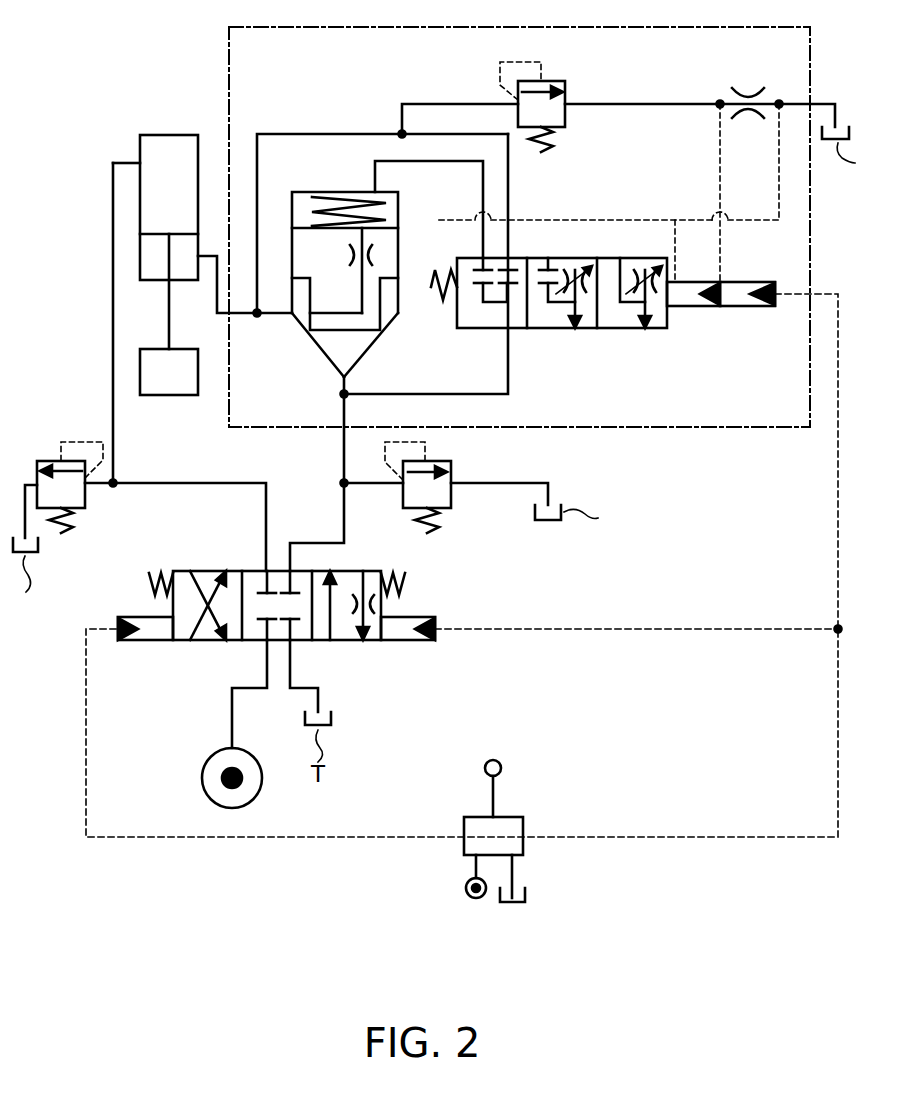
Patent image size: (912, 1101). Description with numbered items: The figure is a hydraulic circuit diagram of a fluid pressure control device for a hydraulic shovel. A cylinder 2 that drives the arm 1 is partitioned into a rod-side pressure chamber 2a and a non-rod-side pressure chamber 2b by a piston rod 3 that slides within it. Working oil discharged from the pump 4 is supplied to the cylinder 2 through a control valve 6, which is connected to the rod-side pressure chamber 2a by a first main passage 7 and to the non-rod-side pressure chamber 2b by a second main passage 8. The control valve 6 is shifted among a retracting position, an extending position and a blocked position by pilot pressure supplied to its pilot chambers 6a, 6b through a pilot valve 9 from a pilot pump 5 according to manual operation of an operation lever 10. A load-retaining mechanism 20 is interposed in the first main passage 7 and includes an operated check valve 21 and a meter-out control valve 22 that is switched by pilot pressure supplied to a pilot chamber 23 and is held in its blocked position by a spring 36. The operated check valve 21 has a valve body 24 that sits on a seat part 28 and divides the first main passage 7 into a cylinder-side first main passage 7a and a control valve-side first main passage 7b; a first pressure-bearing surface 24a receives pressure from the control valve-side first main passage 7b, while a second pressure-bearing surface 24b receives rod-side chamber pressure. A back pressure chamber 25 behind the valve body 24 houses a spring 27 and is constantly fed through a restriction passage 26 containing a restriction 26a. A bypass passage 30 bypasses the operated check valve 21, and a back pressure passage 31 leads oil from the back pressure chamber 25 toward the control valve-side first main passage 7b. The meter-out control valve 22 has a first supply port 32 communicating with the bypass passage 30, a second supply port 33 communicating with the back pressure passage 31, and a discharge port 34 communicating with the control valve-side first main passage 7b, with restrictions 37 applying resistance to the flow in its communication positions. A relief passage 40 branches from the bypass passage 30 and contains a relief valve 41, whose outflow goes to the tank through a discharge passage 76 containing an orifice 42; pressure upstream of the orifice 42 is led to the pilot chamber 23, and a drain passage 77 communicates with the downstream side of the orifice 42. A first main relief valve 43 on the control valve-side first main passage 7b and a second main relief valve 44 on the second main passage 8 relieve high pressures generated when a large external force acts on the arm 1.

The arm 1 is at (180, 396).
The cylinder 2 is at (137, 128).
The rod-side pressure chamber 2a is at (155, 270).
The non-rod-side pressure chamber 2b is at (153, 152).
The piston rod 3 is at (170, 305).
The pump 4 is at (202, 780).
The pilot pump 5 is at (476, 899).
The control valve 6 is at (208, 560).
The pilot chamber 6a is at (146, 626).
The pilot chamber 6b is at (409, 620).
The first main passage 7 is at (334, 411).
The cylinder-side first main passage 7a is at (240, 316).
The control valve-side first main passage 7b is at (343, 461).
The second main passage 8 is at (114, 450).
The pilot valve 9 is at (528, 806).
The operation lever 10 is at (494, 760).
The load-retaining mechanism 20 is at (737, 428).
The operated check valve 21 is at (344, 265).
The meter-out control valve 22 is at (534, 319).
The pilot chamber 23 is at (722, 309).
The valve body 24 is at (312, 260).
The first pressure-bearing surface 24a is at (334, 350).
The second pressure-bearing surface 24b is at (305, 318).
The back pressure chamber 25 is at (304, 212).
The restriction passage 26 is at (367, 300).
The restriction 26a is at (370, 262).
The spring 27 is at (348, 195).
The seat part 28 is at (353, 358).
The bypass passage 30 is at (509, 186).
The back pressure passage 31 is at (446, 161).
The first supply port 32 is at (513, 262).
The second supply port 33 is at (483, 262).
The discharge port 34 is at (510, 335).
The spring 36 is at (440, 298).
The restrictions 37 is at (580, 270).
The relief passage 40 is at (441, 104).
The relief valve 41 is at (566, 88).
The orifice 42 is at (748, 110).
The first main relief valve 43 is at (452, 490).
The second main relief valve 44 is at (54, 461).
The discharge passage 76 is at (661, 104).
The drain passage 77 is at (678, 276).